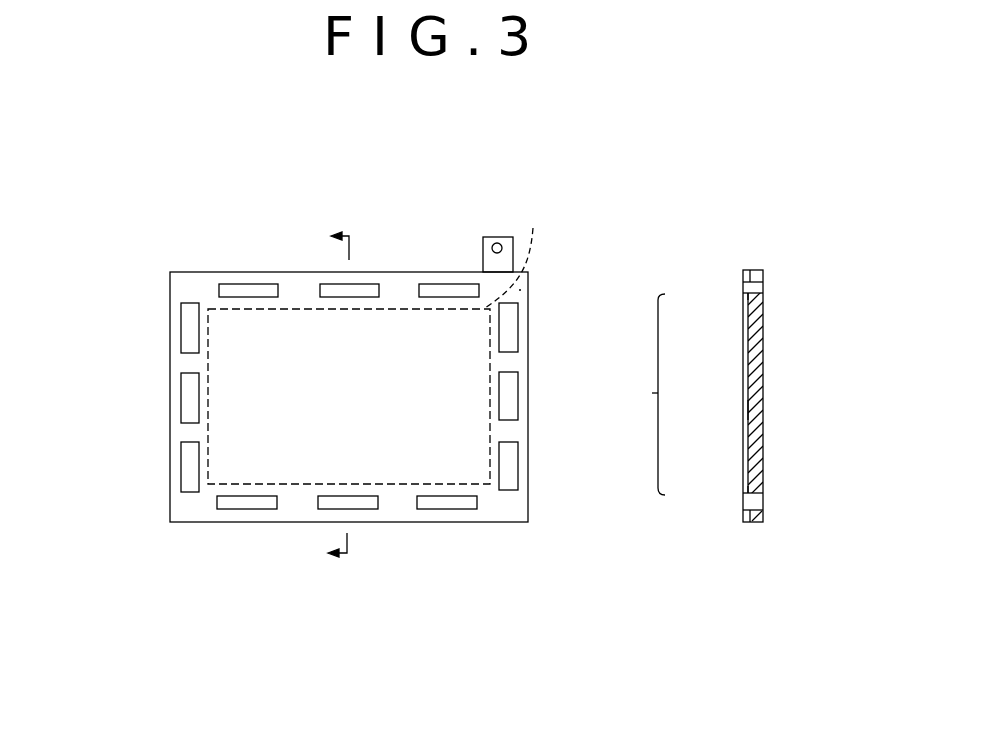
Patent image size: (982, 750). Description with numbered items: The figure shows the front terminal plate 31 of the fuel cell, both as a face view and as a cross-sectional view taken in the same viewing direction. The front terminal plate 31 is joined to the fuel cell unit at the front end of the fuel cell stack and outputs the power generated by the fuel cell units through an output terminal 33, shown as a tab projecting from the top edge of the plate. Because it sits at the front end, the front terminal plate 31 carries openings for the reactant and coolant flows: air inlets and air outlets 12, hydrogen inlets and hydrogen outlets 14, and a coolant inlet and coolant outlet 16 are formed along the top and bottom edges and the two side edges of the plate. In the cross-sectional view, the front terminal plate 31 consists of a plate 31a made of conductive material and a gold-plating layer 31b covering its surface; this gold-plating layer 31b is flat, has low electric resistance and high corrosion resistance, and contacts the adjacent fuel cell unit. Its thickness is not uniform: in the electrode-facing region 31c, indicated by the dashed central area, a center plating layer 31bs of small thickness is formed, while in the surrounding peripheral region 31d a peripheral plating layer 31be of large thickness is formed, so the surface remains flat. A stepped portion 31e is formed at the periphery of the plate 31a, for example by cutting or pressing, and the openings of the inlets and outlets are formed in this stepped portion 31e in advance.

The front terminal plate 31 is at (241, 280).
The plate 31a is at (763, 365).
The gold-plating layer 31b is at (634, 394).
The center plating layer 31bs is at (748, 410).
The peripheral plating layer 31be is at (748, 302).
The electrode-facing region 31c is at (525, 257).
The peripheral region 31d is at (519, 290).
The stepped portion 31e is at (745, 278).
The output terminal 33 is at (488, 240).
The air inlet / air outlet 12 is at (448, 292).
The hydrogen inlet / hydrogen outlet 14 is at (188, 342).
The coolant inlet / coolant outlet 16 is at (188, 398).